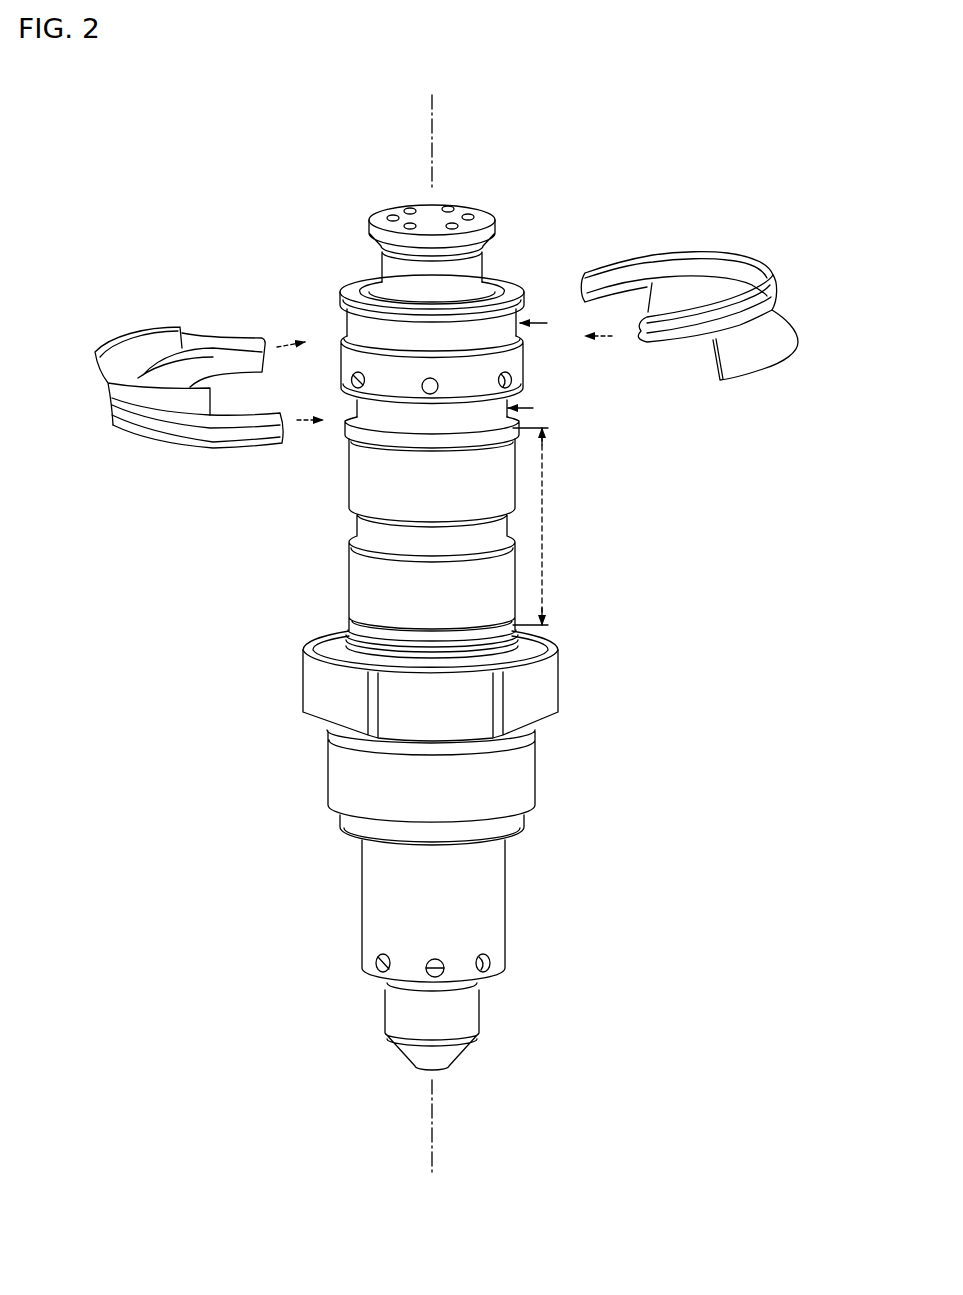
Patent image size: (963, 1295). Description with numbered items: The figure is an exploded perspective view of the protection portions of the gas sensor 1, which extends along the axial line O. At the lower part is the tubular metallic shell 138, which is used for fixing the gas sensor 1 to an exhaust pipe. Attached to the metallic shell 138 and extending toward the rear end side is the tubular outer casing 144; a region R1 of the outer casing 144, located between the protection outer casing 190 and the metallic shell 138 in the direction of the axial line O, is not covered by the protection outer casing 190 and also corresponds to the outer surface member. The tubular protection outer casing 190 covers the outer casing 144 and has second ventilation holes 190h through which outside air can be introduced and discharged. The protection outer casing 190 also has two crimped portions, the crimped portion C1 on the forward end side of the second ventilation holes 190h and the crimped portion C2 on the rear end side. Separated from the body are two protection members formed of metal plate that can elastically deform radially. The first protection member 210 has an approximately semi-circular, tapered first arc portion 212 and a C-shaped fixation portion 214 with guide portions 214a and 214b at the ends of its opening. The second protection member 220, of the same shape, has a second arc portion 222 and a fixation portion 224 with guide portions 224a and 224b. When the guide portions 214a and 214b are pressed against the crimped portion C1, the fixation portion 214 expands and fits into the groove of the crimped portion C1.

The gas sensor 1 is at (673, 582).
The metallic shell 138 is at (556, 677).
The outer casing 144 is at (508, 585).
The protection outer casing 190 is at (520, 372).
The second ventilation holes 190h is at (360, 389).
The first protection member 210 is at (154, 306).
The first arc portion 212 is at (112, 384).
The fixation portion 214 is at (222, 340).
The guide portion 214a is at (262, 352).
The guide portion 214b is at (287, 440).
The second protection member 220 is at (691, 235).
The second arc portion 222 is at (785, 350).
The fixation portion 224 is at (622, 270).
The guide portion 224a is at (577, 285).
The guide portion 224b is at (637, 342).
The crimped portion C1 is at (419, 384).
The crimped portion C2 is at (566, 325).
The region R1 is at (544, 526).
The axial line O is at (436, 1128).